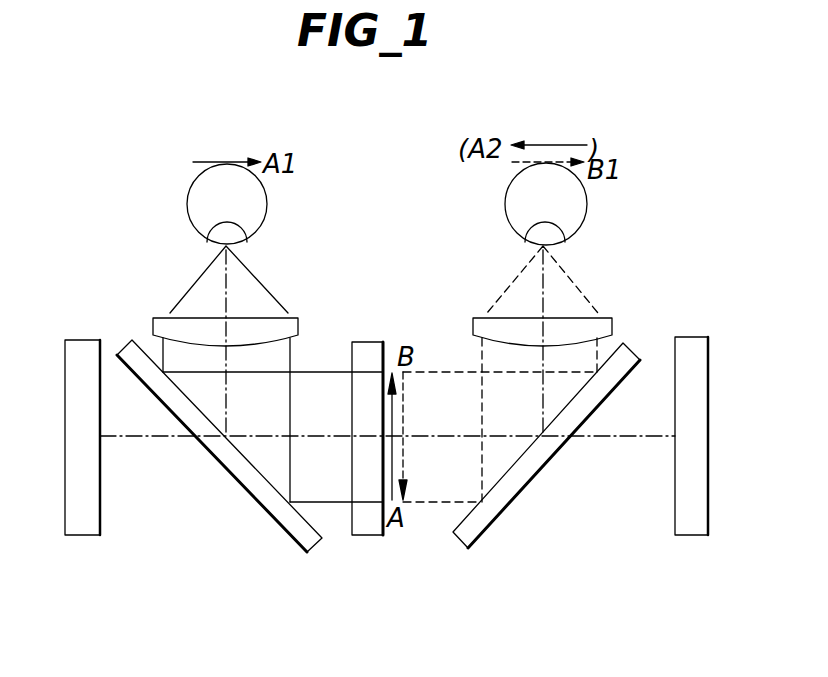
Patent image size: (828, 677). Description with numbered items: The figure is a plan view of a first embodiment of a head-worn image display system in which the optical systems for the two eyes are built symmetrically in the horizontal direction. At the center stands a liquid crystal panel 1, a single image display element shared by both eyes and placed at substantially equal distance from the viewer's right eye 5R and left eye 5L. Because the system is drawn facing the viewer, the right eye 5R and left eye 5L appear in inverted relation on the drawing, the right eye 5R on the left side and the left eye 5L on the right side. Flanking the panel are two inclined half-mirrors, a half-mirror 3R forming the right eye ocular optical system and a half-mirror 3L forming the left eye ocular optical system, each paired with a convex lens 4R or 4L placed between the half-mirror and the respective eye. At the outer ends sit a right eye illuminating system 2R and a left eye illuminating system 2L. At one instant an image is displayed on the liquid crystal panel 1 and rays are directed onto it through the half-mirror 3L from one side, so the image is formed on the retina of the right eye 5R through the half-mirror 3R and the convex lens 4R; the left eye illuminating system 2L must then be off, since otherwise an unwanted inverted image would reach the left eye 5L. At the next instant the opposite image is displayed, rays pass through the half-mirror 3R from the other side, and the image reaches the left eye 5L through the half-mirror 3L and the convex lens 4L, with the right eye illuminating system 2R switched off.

The liquid crystal panel (LCD) 1 is at (368, 536).
The left eye illuminating system 2L is at (80, 536).
The right eye illuminating system 2R is at (690, 536).
The half-mirror 3L is at (487, 512).
The half-mirror 3R is at (283, 512).
The convex lens 4L is at (612, 318).
The convex lens 4R is at (160, 316).
The left eye 5L is at (587, 205).
The right eye 5R is at (188, 190).